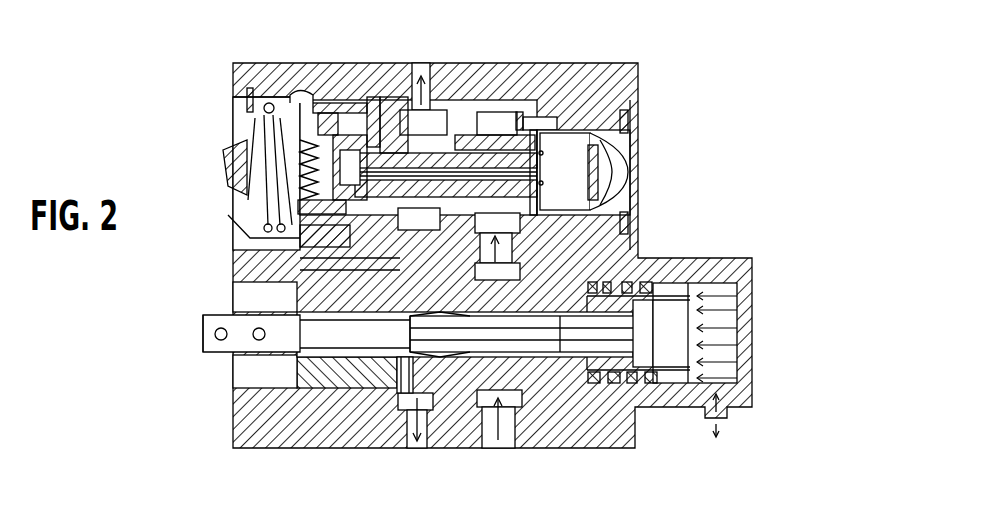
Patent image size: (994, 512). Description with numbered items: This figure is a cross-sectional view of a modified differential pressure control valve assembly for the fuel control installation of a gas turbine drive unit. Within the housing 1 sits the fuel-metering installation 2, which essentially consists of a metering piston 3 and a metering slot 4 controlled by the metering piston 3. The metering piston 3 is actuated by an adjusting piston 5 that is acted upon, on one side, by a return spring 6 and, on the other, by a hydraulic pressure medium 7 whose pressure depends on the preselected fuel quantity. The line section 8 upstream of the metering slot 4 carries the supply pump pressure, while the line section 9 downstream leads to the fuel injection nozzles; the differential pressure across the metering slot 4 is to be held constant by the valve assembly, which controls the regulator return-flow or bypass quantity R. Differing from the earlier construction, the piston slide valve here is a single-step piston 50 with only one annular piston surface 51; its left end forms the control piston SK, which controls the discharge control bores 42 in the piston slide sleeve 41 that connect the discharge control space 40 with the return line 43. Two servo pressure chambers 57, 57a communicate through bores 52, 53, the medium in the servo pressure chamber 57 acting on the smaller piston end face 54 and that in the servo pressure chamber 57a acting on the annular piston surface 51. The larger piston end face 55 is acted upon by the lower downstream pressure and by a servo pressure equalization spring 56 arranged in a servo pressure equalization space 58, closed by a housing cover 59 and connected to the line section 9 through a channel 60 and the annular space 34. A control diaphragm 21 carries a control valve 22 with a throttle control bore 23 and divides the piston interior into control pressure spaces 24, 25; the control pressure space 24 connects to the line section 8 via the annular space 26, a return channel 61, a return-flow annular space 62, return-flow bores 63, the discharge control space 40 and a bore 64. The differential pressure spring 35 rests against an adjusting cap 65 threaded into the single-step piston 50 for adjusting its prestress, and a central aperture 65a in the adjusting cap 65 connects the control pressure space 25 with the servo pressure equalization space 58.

The housing 1 is at (252, 437).
The fuel-metering installation 2 is at (553, 352).
The metering piston 3 is at (306, 328).
The metering slot 4 is at (397, 375).
The adjusting piston 5 is at (676, 384).
The return spring 6 is at (640, 390).
The hydraulic pressure medium 7 is at (728, 412).
The line section 8 is at (505, 432).
The line section 9 is at (428, 432).
The control diaphragm 21 is at (327, 113).
The control valve 22 is at (350, 135).
The control bore 23 is at (290, 174).
The control pressure space 24 is at (350, 103).
The control pressure space 25 is at (298, 207).
The annular space 26 is at (514, 268).
The annular space 34 is at (452, 262).
The differential pressure spring 35 is at (300, 188).
The discharge control space 40 is at (484, 114).
The piston slide sleeve 41 is at (541, 118).
The discharge control bores 42 is at (437, 128).
The return line 43 is at (438, 98).
The single-step piston 50 is at (543, 153).
The annular piston surface 51 is at (374, 97).
The bore 52 is at (466, 136).
The bore 53 is at (434, 225).
The piston end face 54 is at (543, 183).
The piston end face 55 is at (300, 103).
The servo pressure equalization spring 56 is at (247, 100).
The servo pressure chamber 57 is at (567, 130).
The servo pressure chamber 57a is at (400, 272).
The servo pressure equalization space 58 is at (288, 234).
The housing cover 59 is at (226, 172).
The channel 60 is at (358, 262).
The return channel 61 is at (493, 282).
The return-flow annular space 62 is at (520, 112).
The return-flow bores 63 is at (533, 190).
The bore 64 is at (392, 150).
The adjusting cap 65 is at (285, 137).
The central aperture 65a is at (288, 151).
The regulator return-flow or bypass quantity R is at (424, 72).
The control piston SK is at (461, 330).